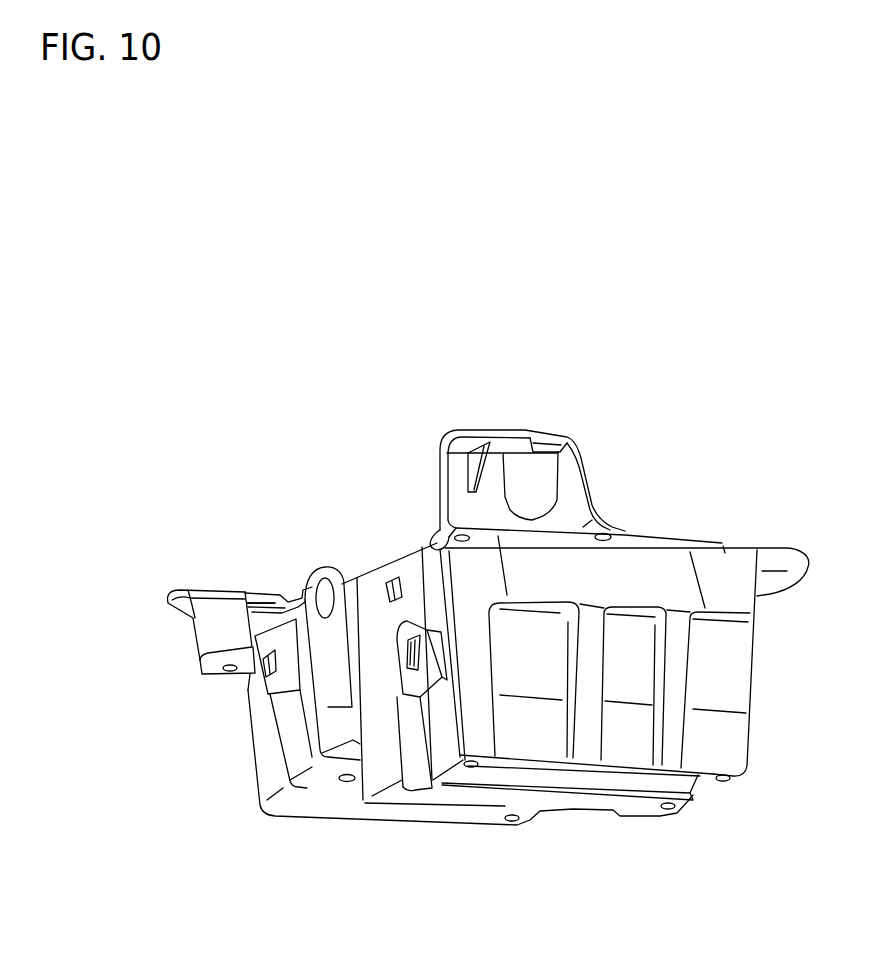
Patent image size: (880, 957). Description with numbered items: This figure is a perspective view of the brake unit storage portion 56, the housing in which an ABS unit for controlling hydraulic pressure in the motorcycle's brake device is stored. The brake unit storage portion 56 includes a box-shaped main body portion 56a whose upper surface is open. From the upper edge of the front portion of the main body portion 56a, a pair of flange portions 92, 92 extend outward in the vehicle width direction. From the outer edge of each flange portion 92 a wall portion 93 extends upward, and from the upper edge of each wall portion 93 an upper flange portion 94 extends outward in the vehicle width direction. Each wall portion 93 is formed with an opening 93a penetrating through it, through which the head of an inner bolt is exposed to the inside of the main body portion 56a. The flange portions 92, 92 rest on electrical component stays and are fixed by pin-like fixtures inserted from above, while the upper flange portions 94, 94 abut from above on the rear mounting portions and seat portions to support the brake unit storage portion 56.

The brake unit storage portion 56 is at (684, 510).
The main body portion 56a is at (500, 803).
The flange portion 92 is at (438, 530).
The wall portion 93 is at (457, 473).
The opening 93a is at (543, 467).
The upper flange portion 94 is at (491, 428).